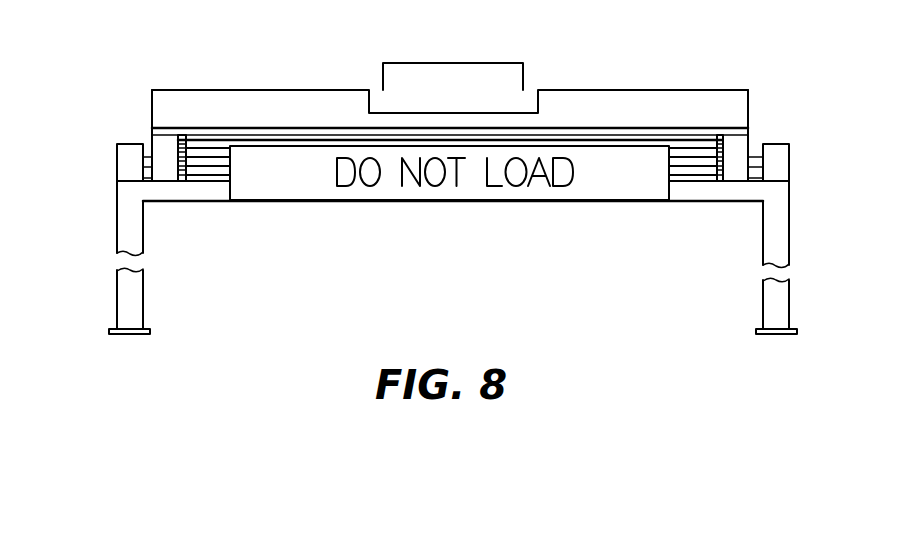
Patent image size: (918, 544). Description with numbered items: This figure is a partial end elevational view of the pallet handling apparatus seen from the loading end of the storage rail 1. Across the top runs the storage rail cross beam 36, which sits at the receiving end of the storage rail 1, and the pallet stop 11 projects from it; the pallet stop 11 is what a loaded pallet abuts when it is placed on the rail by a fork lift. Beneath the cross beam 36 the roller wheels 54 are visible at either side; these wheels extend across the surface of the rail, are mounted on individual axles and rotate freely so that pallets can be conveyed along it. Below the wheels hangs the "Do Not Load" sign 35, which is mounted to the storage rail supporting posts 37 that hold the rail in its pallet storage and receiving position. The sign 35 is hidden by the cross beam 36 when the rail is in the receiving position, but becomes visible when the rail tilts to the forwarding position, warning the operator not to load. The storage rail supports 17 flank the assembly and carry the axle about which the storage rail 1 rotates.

The storage rail 1 is at (740, 145).
The pallet stop 11 is at (412, 72).
The storage rail supports 17 is at (125, 157).
The "Do Not Load" sign 35 is at (280, 192).
The storage rail cross beam 36 is at (273, 110).
The storage rail supporting posts 37 is at (127, 228).
The roller wheels 54 is at (705, 153).